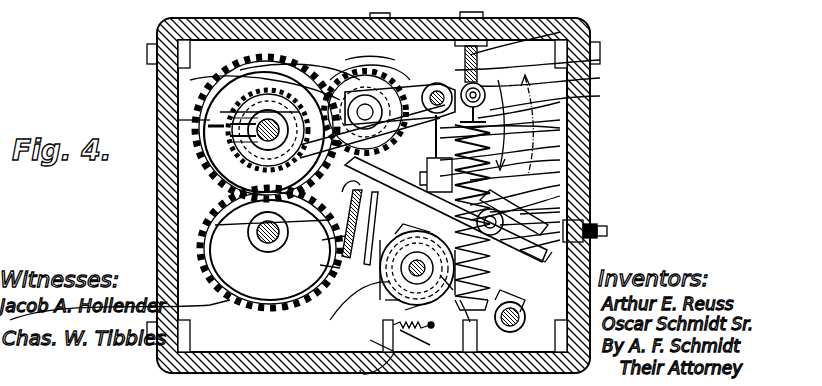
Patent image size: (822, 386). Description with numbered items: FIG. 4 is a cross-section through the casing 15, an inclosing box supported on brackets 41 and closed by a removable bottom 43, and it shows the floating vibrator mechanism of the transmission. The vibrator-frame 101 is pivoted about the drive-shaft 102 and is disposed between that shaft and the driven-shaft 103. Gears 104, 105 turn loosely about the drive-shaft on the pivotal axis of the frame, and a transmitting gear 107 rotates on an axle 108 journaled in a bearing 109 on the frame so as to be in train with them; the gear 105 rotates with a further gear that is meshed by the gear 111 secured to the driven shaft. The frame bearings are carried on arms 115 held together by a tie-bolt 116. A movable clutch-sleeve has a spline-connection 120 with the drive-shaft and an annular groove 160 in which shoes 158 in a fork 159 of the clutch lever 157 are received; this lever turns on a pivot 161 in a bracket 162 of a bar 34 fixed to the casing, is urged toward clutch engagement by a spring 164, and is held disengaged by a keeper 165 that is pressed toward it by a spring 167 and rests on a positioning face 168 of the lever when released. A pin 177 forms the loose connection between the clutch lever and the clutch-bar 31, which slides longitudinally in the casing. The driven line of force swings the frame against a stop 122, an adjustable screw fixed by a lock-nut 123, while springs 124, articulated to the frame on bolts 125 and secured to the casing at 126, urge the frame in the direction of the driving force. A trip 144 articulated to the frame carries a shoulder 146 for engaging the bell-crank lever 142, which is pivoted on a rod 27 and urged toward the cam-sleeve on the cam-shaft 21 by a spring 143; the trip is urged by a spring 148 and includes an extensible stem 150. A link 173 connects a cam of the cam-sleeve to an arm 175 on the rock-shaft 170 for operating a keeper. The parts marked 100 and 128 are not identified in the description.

The casing 15 is at (578, 22).
The cam-shaft 21 is at (385, 300).
The rod 27 is at (215, 225).
The clutch-bar 31 is at (590, 222).
The bar 34 is at (290, 232).
The brackets 41 is at (412, 52).
The removable bottom 43 is at (178, 172).
The adjusting screw 100 is at (478, 52).
The vibrator-frame 101 is at (600, 60).
The drive-shaft 102 is at (228, 125).
The driven-shaft 103 is at (260, 232).
The gear 104 is at (190, 80).
The gear 105 is at (262, 136).
The transmitting gear 107 is at (560, 102).
The axles 108 is at (560, 120).
The bearings 109 is at (560, 130).
The gear 111 is at (215, 202).
The arms 115 is at (600, 78).
The tie-bolt 116 is at (485, 95).
The spline-connection 120 is at (246, 130).
The stop 122 is at (455, 100).
The lock-nut 123 is at (560, 32).
The spring 124 is at (560, 146).
The bolts 125 is at (600, 96).
The spring securing point 126 is at (463, 340).
The collar 128 is at (228, 119).
The bell-crank lever 142 is at (340, 268).
The spring 143 is at (345, 240).
The trip 144 is at (560, 172).
The shoulder 146 is at (560, 160).
The spring 148 is at (395, 322).
The stem 150 is at (560, 128).
The clutch lever 157 is at (215, 183).
The shoes 158 is at (222, 113).
The fork 159 is at (300, 70).
The annular groove 160 is at (208, 126).
The pivot 161 is at (352, 95).
The bracket 162 is at (370, 75).
The spring 164 is at (560, 196).
The keeper 165 is at (560, 222).
The spring 167 is at (560, 232).
The positioning face 168 is at (560, 208).
The rock-shaft 170 is at (522, 305).
The link 173 is at (560, 212).
The arm 175 is at (560, 240).
The pin 177 is at (560, 185).